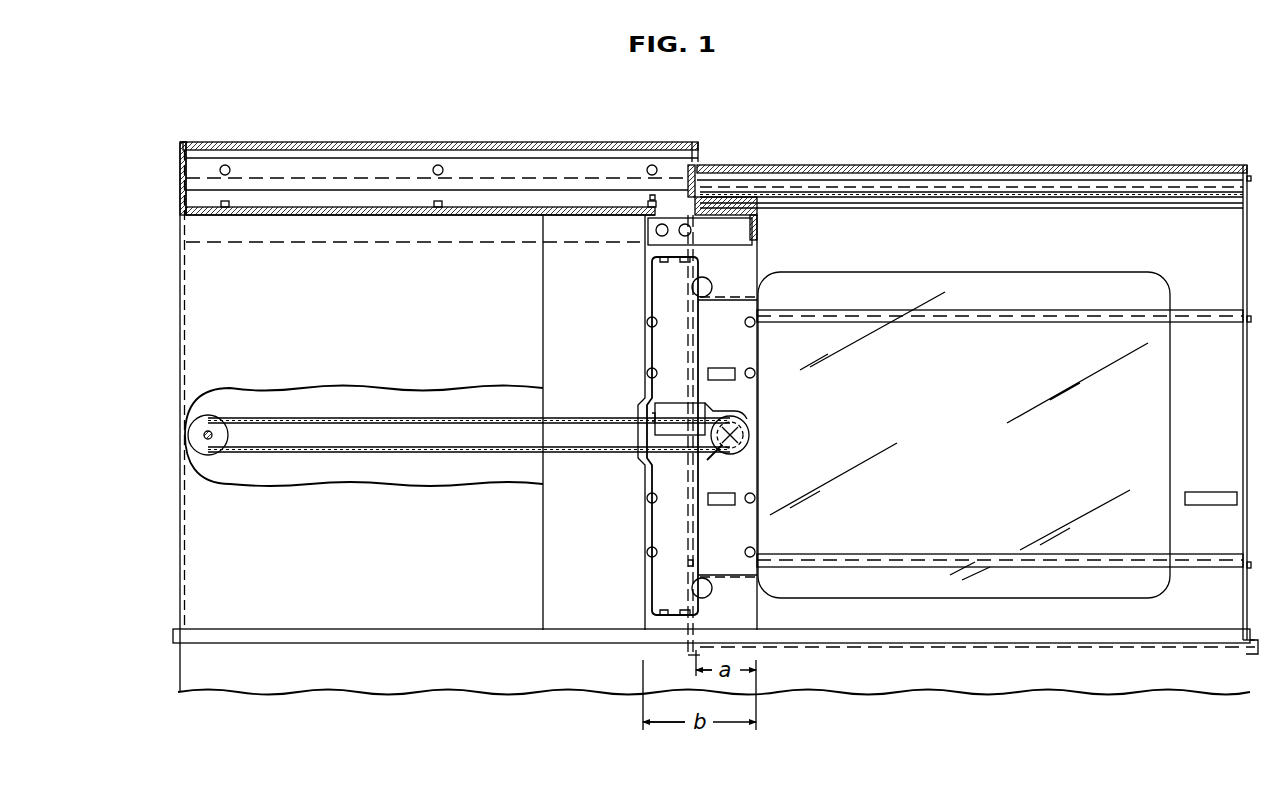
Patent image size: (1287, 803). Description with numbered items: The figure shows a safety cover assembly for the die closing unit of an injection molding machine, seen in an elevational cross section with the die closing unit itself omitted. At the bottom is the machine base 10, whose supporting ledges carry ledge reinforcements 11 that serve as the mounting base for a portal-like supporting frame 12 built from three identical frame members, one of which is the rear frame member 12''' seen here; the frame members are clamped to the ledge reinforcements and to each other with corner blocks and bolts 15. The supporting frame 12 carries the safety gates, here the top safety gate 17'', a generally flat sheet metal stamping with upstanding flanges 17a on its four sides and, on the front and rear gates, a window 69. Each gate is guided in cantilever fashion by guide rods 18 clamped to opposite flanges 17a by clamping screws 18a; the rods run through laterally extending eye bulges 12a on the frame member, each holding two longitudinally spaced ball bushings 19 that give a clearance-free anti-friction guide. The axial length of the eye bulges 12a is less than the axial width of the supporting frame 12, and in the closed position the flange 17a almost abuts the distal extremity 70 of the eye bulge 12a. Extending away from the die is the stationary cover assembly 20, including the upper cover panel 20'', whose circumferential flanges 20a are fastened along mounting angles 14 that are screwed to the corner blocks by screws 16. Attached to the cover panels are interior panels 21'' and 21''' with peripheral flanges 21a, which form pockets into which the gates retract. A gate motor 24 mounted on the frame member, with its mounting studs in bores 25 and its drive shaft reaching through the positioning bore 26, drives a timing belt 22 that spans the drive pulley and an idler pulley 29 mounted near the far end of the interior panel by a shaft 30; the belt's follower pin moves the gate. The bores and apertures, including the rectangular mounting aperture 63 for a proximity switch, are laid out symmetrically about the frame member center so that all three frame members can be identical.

The machine base 10 is at (402, 667).
The ledge reinforcements 11 is at (284, 643).
The supporting frame 12 is at (661, 435).
The eye bulges 12a is at (758, 213).
The rear frame member 12''' is at (637, 436).
The mounting angles 14 is at (522, 165).
The bolts 15 is at (654, 606).
The screws 16 is at (225, 165).
The top safety gate 17'' is at (1166, 368).
The upstanding flanges 17a is at (1247, 165).
The guide rods 18 is at (878, 182).
The clamping screws 18a is at (694, 172).
The ball bushings 19 is at (745, 172).
The cover assembly 20 is at (440, 129).
The upper cover panel 20'' is at (442, 127).
The circumferential flanges 20a is at (182, 160).
The peripheral flanges 21a is at (180, 288).
The interior panel 21'' is at (420, 242).
The interior panel 21''' is at (338, 422).
The timing belt 22 is at (400, 416).
The gate motor 24 is at (672, 404).
The bores 25 is at (752, 448).
The positioning bore 26 is at (718, 452).
The idler pulley 29 is at (220, 432).
The shaft 30 is at (208, 432).
The rectangular mounting aperture 63 is at (730, 374).
The window 69 is at (1150, 483).
The distal extremity 70 is at (698, 214).